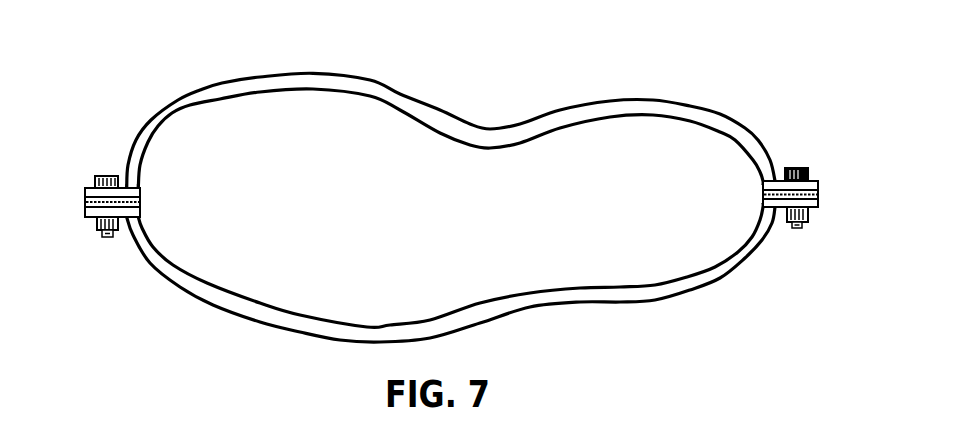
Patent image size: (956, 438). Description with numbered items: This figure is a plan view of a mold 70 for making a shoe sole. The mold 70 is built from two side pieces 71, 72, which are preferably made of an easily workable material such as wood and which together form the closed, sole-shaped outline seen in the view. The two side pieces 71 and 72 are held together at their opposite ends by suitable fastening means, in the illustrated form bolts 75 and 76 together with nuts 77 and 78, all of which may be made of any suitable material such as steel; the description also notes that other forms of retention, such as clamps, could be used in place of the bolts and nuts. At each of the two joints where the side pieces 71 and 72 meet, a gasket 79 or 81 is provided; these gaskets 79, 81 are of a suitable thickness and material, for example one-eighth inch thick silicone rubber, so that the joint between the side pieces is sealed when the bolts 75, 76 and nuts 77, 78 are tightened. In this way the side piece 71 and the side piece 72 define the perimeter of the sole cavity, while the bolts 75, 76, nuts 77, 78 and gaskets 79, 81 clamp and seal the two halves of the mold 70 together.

The mold 70 is at (450, 203).
The side piece 71 is at (295, 68).
The side piece 72 is at (278, 335).
The bolt 75 is at (798, 165).
The bolt 76 is at (102, 170).
The nut 77 is at (90, 227).
The nut 78 is at (812, 220).
The gasket 79 is at (80, 206).
The gasket 81 is at (822, 197).